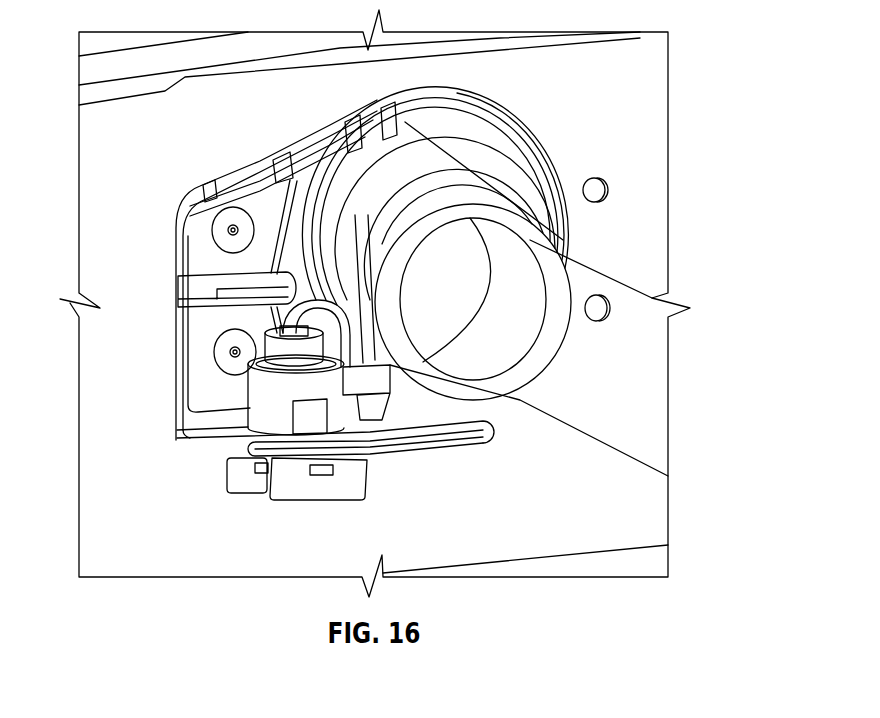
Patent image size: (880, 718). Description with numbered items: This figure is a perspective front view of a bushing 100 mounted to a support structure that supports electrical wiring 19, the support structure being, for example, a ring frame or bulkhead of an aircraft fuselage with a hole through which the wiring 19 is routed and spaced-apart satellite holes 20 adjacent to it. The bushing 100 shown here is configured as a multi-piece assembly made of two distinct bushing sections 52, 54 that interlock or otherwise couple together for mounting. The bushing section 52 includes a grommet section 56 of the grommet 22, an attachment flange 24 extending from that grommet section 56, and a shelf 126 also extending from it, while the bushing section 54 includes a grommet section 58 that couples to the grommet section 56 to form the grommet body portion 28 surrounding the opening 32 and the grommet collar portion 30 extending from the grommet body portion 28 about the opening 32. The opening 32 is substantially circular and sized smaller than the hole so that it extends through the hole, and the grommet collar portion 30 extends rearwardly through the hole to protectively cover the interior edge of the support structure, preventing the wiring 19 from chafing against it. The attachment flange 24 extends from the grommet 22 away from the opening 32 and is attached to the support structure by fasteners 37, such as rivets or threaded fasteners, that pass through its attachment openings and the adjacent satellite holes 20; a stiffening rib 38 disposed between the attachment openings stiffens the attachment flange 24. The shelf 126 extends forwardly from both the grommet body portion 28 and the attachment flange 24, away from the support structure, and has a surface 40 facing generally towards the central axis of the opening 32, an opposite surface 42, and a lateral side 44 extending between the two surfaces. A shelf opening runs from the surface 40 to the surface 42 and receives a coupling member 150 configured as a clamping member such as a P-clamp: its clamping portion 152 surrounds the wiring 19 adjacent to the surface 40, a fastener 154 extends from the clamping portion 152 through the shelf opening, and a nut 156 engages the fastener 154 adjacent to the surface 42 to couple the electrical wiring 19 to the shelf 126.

The electrical wiring 19 is at (635, 283).
The satellite holes 20 is at (594, 192).
The grommet 22 is at (368, 115).
The attachment flange 24 is at (197, 238).
The grommet body portion 28 is at (520, 133).
The grommet collar portion 30 is at (473, 173).
The opening 32 is at (497, 148).
The fasteners 37 is at (230, 215).
The stiffening rib 38 is at (190, 297).
The surface 40 is at (223, 437).
The surface 42 is at (447, 443).
The lateral side 44 is at (193, 437).
The bushing section 52 is at (187, 400).
The bushing section 54 is at (480, 123).
The grommet section 56 is at (337, 167).
The grommet section 58 is at (553, 183).
The bushing 100 is at (190, 263).
The shelf 126 is at (220, 435).
The coupling member 150 is at (328, 387).
The clamping portion 152 is at (553, 240).
The fastener 154 is at (260, 353).
The nut 156 is at (287, 488).